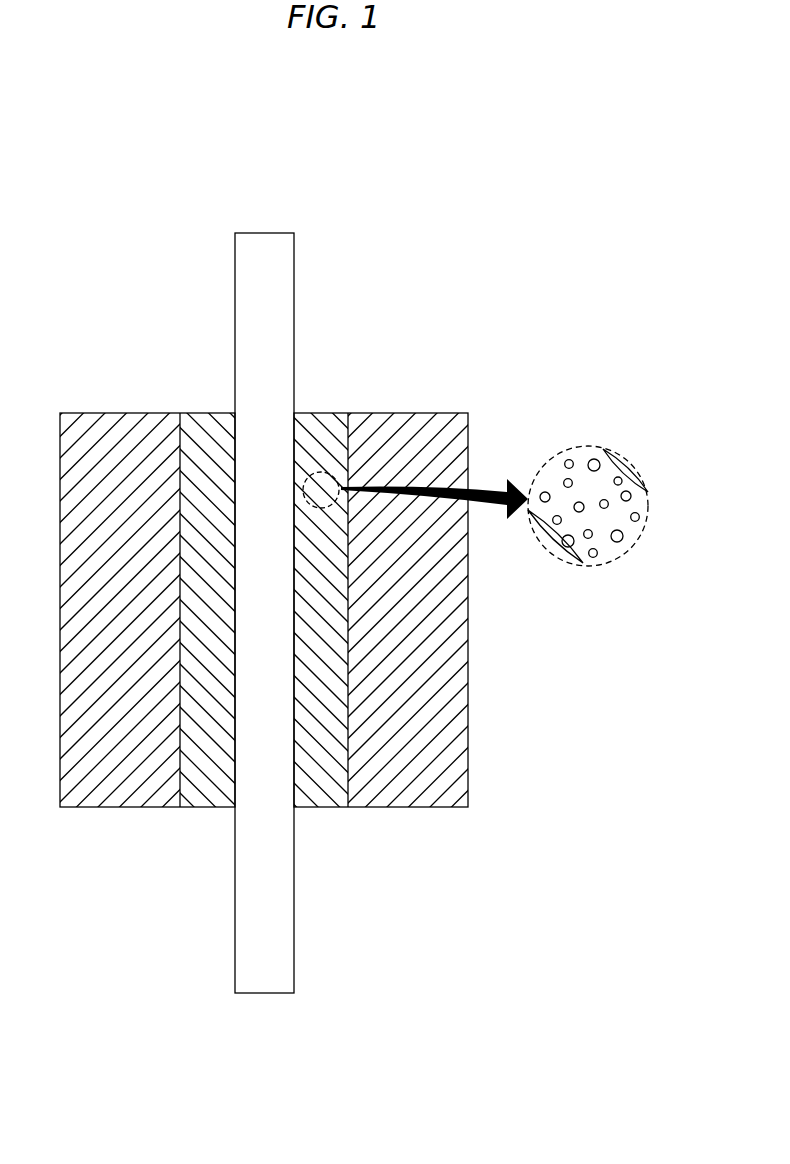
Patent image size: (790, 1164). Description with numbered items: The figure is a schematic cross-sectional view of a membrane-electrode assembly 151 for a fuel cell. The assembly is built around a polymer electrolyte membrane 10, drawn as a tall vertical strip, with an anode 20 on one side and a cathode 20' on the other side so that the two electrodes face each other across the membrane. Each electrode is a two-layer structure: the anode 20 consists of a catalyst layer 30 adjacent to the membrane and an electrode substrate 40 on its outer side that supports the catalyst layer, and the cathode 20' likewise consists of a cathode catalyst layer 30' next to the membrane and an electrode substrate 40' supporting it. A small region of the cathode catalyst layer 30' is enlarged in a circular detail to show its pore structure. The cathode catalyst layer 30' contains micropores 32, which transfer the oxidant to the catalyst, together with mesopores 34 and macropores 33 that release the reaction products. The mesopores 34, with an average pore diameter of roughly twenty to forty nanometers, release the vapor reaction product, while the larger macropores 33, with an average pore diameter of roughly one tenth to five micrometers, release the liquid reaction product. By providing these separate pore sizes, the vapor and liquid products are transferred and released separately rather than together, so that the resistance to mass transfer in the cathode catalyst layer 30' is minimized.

The membrane-electrode assembly 151 is at (370, 164).
The polymer electrolyte membrane 10 is at (273, 273).
The anode 20 is at (358, 607).
The cathode 20' is at (395, 605).
The catalyst layer 30 is at (358, 631).
The cathode catalyst layer 30' is at (395, 631).
The electrode substrate 40 is at (295, 631).
The electrode substrate 40' is at (395, 631).
The micropores 32 is at (621, 477).
The macropores 33 is at (594, 459).
The mesopores 34 is at (631, 496).